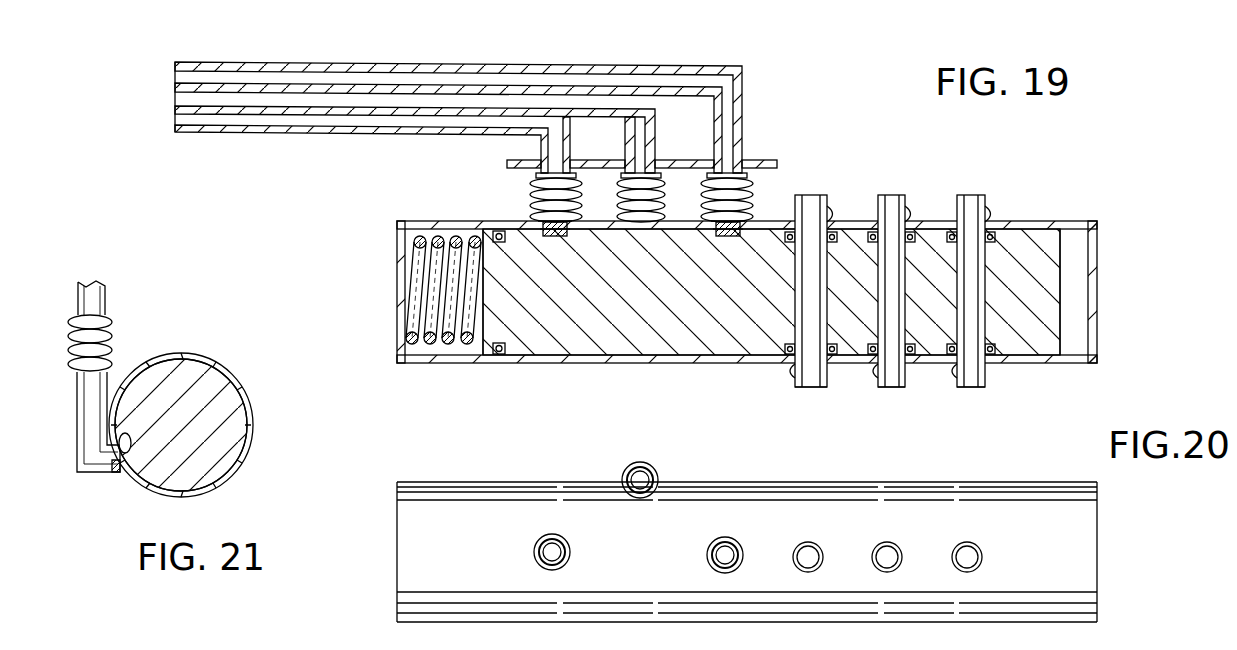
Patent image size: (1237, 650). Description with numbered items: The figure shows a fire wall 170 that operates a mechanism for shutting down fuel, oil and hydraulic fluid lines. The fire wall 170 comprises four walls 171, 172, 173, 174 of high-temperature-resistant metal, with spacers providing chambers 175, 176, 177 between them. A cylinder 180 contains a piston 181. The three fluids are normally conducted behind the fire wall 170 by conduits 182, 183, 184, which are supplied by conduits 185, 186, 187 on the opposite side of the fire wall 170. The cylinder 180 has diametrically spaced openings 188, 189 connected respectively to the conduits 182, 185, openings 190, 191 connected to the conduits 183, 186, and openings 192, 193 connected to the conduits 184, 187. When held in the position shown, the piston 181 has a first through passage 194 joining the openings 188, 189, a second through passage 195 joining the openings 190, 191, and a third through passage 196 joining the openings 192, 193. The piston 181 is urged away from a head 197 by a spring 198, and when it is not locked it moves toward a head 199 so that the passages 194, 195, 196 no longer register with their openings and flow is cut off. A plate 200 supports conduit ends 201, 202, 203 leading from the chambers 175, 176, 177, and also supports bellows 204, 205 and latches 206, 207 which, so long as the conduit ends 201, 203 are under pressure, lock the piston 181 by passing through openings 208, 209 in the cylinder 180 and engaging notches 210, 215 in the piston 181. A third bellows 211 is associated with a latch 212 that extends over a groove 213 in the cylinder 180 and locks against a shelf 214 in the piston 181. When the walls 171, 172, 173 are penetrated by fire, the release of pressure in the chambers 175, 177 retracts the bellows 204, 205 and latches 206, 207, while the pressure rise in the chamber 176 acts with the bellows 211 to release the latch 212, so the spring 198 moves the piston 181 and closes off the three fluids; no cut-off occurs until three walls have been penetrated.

In FIG. 19, the fire wall 170 is at (750, 91).
In FIG. 19, the wall 171 is at (199, 62).
In FIG. 19, the wall 172 is at (176, 70).
In FIG. 19, the wall 173 is at (176, 98).
In FIG. 19, the wall 174 is at (176, 126).
In FIG. 19, the chamber 175 is at (263, 77).
In FIG. 19, the chamber 176 is at (323, 97).
In FIG. 19, the chamber 177 is at (207, 118).
In FIG. 19, the cylinder 180 is at (560, 353).
In FIG. 20, the cylinder 180 is at (650, 578).
In FIG. 21, the cylinder 180 is at (248, 403).
In FIG. 19, the piston 181 is at (620, 351).
In FIG. 21, the piston 181 is at (203, 378).
In FIG. 19, the conduit 182 is at (812, 196).
In FIG. 20, the conduit 182 is at (815, 544).
In FIG. 19, the conduit 183 is at (889, 198).
In FIG. 20, the conduit 183 is at (889, 544).
In FIG. 19, the conduit 184 is at (970, 200).
In FIG. 20, the conduit 184 is at (966, 544).
In FIG. 19, the conduit 185 is at (806, 386).
In FIG. 19, the conduit 186 is at (888, 386).
In FIG. 19, the conduit 187 is at (973, 386).
In FIG. 19, the opening 188 is at (829, 218).
In FIG. 19, the opening 189 is at (795, 375).
In FIG. 19, the opening 190 is at (905, 218).
In FIG. 19, the opening 191 is at (878, 376).
In FIG. 19, the opening 192 is at (985, 220).
In FIG. 19, the opening 193 is at (957, 377).
In FIG. 19, the first through passage 194 is at (810, 300).
In FIG. 19, the second through passage 195 is at (885, 300).
In FIG. 19, the third through passage 196 is at (962, 300).
In FIG. 19, the head 197 is at (398, 306).
In FIG. 19, the spring 198 is at (433, 343).
In FIG. 19, the head 199 is at (1093, 306).
In FIG. 19, the plate 200 is at (507, 161).
In FIG. 19, the conduit end 201 is at (538, 179).
In FIG. 20, the conduit end 201 is at (556, 522).
In FIG. 19, the conduit end 202 is at (622, 160).
In FIG. 20, the conduit end 202 is at (655, 468).
In FIG. 19, the conduit end 203 is at (706, 160).
In FIG. 20, the conduit end 203 is at (723, 544).
In FIG. 19, the bellows 204 is at (530, 186).
In FIG. 19, the bellows 205 is at (760, 169).
In FIG. 19, the latch 206 is at (566, 236).
In FIG. 19, the latch 207 is at (729, 262).
In FIG. 19, the opening 208 is at (543, 229).
In FIG. 19, the opening 209 is at (722, 237).
In FIG. 19, the notch 210 is at (563, 231).
In FIG. 19, the third bellows 211 is at (711, 190).
In FIG. 21, the third bellows 211 is at (110, 341).
In FIG. 21, the latch 212 is at (78, 419).
In FIG. 21, the groove 213 is at (116, 476).
In FIG. 21, the shelf 214 is at (136, 452).
In FIG. 19, the notch 215 is at (733, 231).